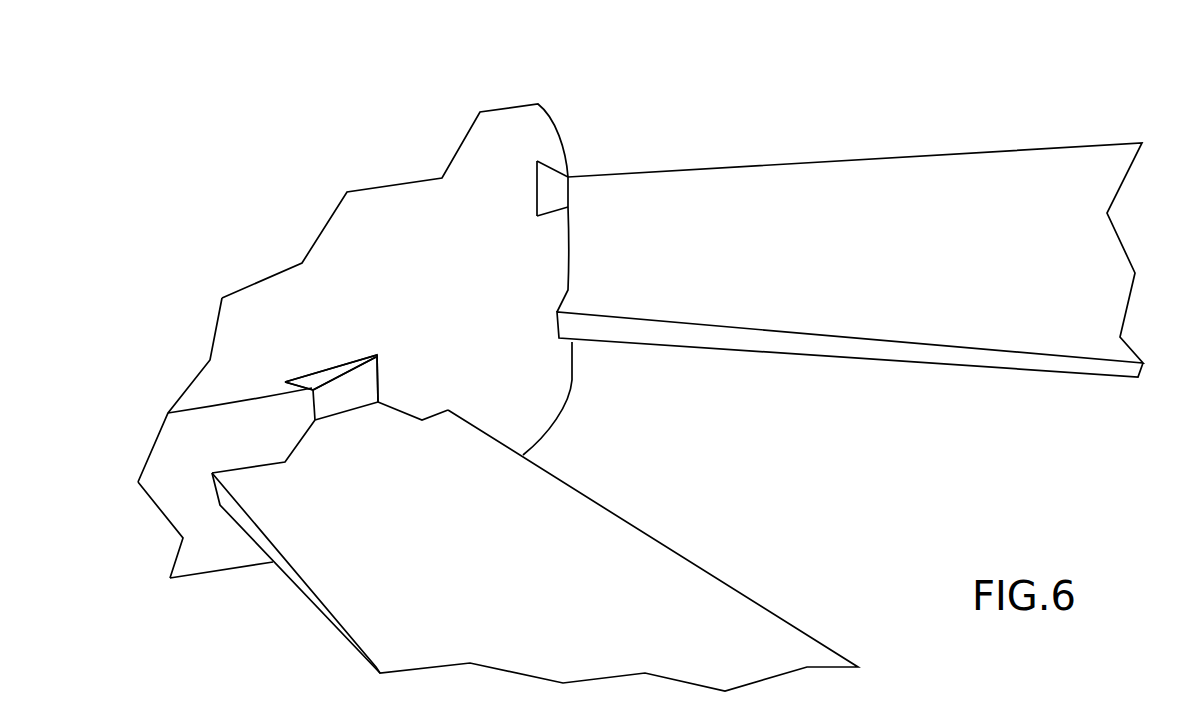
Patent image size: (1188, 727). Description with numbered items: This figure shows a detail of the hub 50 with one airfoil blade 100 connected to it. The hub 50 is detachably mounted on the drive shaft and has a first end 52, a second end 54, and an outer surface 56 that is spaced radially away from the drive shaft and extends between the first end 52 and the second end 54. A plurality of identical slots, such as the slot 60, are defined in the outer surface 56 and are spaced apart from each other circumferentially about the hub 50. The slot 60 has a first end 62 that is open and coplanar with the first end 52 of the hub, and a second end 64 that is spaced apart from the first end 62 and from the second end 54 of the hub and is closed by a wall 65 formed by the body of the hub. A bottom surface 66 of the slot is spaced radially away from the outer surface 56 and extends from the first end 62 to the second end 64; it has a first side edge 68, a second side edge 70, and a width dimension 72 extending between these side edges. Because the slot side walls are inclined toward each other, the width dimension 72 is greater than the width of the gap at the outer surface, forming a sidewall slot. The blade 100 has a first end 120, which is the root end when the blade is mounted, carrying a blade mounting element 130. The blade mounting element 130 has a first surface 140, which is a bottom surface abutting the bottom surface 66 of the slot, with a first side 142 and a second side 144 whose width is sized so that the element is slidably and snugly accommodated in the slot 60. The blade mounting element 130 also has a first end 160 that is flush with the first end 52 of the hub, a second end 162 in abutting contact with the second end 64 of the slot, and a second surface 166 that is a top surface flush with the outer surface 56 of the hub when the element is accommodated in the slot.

The hub 50 is at (378, 185).
The first end 52 is at (193, 395).
The second end 54 is at (227, 573).
The outer surface 56 is at (193, 518).
The slot 60 is at (557, 162).
The first end 62 is at (357, 352).
The second end 64 is at (370, 409).
The wall 65 is at (322, 366).
The bottom surface 66 is at (297, 372).
The first side edge 68 is at (378, 355).
The second side edge 70 is at (285, 382).
The width dimension 72 is at (524, 175).
The airfoil blade 100 is at (697, 563).
The first end 120 is at (568, 287).
The blade mounting element 130 is at (552, 213).
The first surface 140 is at (303, 377).
The first side 142 is at (537, 216).
The second side 144 is at (537, 160).
The first end 160 is at (322, 380).
The second end 162 is at (315, 450).
The second surface 166 is at (362, 398).